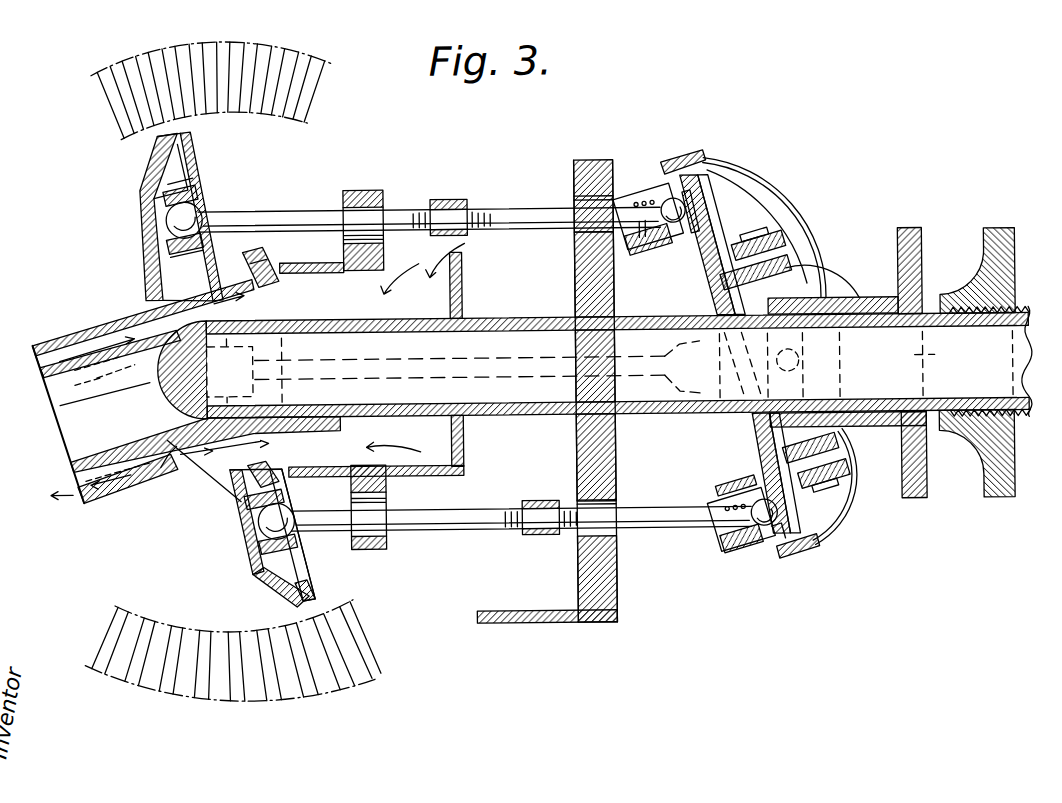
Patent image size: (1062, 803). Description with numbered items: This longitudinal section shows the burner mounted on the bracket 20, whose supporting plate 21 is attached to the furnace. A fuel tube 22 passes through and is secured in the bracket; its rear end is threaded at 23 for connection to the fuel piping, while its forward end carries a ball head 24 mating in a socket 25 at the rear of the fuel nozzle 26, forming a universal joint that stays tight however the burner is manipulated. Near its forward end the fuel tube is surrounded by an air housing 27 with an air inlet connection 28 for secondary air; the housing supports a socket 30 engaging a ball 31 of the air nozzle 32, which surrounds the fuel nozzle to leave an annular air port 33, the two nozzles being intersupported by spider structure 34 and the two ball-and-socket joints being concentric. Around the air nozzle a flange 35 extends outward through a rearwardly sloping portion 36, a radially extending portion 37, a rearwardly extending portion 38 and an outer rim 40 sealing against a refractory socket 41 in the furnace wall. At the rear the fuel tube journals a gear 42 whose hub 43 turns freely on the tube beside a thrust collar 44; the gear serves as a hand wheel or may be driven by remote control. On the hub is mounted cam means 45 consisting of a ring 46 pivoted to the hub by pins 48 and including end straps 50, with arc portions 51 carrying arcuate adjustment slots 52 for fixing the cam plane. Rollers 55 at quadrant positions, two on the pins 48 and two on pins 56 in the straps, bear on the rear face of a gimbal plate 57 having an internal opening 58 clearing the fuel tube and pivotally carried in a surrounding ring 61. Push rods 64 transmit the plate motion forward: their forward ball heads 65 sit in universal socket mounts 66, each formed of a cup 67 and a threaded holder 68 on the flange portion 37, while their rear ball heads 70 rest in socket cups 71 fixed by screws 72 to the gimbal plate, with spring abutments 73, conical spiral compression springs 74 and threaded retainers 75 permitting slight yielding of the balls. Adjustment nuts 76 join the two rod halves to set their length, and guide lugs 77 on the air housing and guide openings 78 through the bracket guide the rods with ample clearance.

The bracket 20 is at (615, 588).
The supporting plate 21 is at (527, 621).
The fuel tube 22 is at (519, 319).
The threaded end 23 is at (1022, 422).
The ball head 24 is at (160, 339).
The socket 25 is at (190, 436).
The fuel nozzle 26 is at (71, 467).
The air housing 27 is at (463, 284).
The air inlet connection 28 is at (397, 342).
The socket 30 is at (241, 254).
The ball 31 is at (154, 270).
The air nozzle 32 is at (58, 329).
The annular air port 33 is at (79, 495).
The spider structure 34 is at (164, 463).
The flange 35 is at (257, 570).
The rearwardly sloping portion 36 is at (244, 478).
The radially extending portion 37 is at (241, 529).
The rearwardly extending portion 38 is at (300, 580).
The outer rim 40 is at (293, 598).
The socket 41 is at (296, 117).
The gear 42 is at (923, 266).
The hub 43 is at (861, 310).
The thrust collar 44 is at (994, 241).
The cam means 45 is at (758, 249).
The ring 46 is at (781, 279).
The pins 48 is at (797, 372).
The end straps 50 is at (836, 446).
The arc portions 51 is at (790, 287).
The arcuate adjustment slots 52 is at (915, 358).
The rollers 55 is at (744, 249).
The pins 56 is at (826, 492).
The gimbal plate 57 is at (711, 207).
The internal opening 58 is at (745, 422).
The ring 61 is at (801, 559).
The push rods 64 is at (520, 209).
The ball heads 65 is at (197, 208).
The universal socket mounts 66 is at (182, 199).
The cup 67 is at (150, 217).
The holder 68 is at (185, 189).
The ball heads 70 is at (765, 528).
The socket cups 71 is at (771, 539).
The screws 72 is at (699, 201).
The spring abutments 73 is at (755, 532).
The conical spiral compression springs 74 is at (738, 545).
The retainers 75 is at (732, 491).
The adjustment nuts 76 is at (442, 198).
The guide lugs 77 is at (362, 186).
The guide openings 78 is at (600, 165).